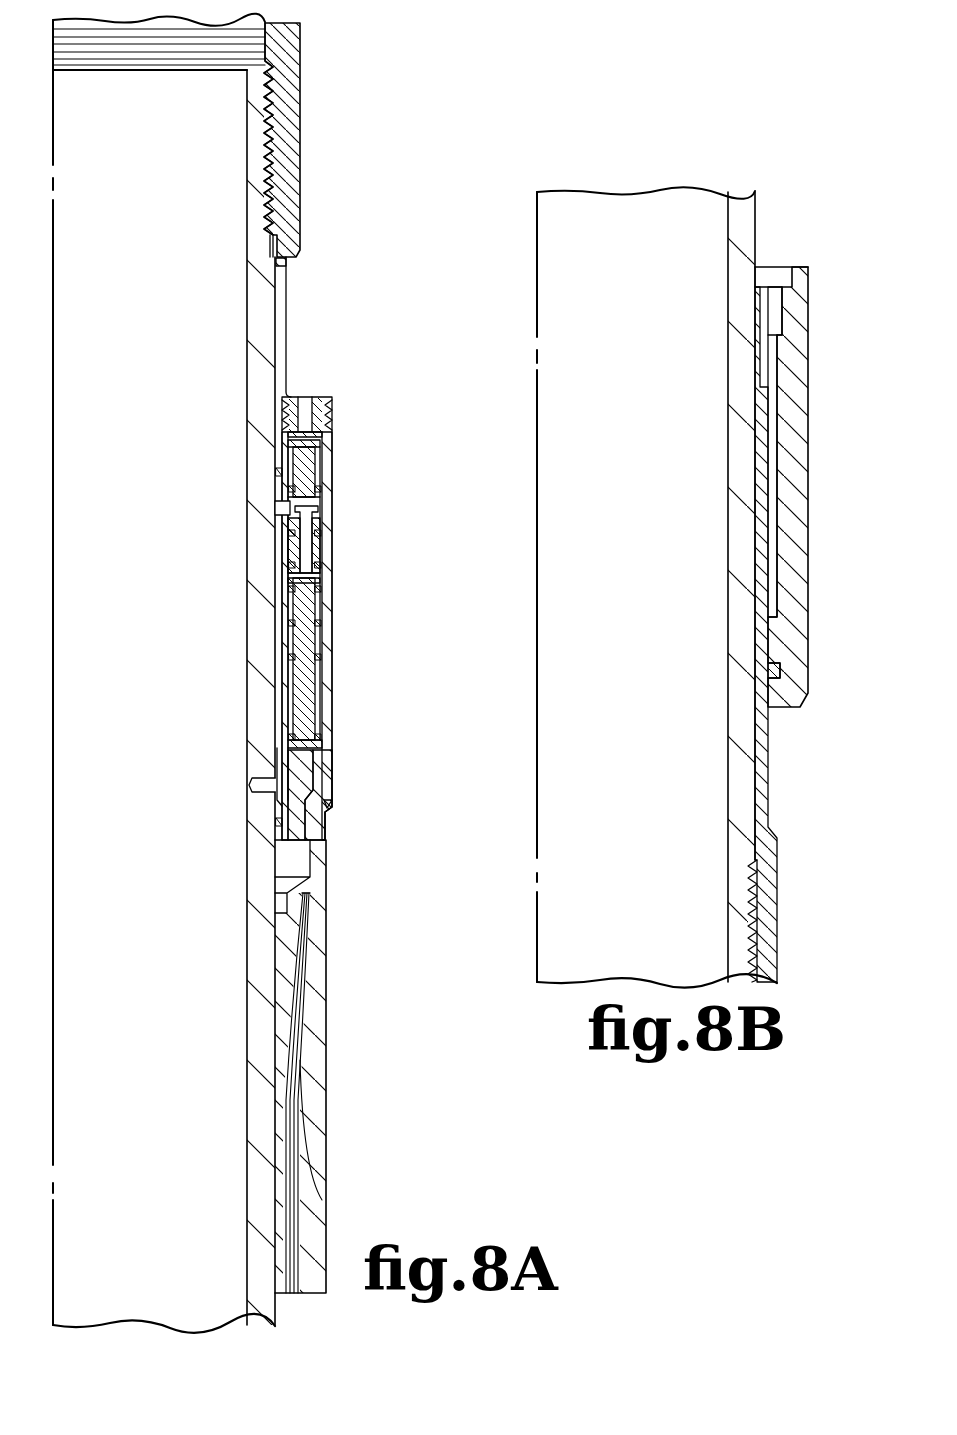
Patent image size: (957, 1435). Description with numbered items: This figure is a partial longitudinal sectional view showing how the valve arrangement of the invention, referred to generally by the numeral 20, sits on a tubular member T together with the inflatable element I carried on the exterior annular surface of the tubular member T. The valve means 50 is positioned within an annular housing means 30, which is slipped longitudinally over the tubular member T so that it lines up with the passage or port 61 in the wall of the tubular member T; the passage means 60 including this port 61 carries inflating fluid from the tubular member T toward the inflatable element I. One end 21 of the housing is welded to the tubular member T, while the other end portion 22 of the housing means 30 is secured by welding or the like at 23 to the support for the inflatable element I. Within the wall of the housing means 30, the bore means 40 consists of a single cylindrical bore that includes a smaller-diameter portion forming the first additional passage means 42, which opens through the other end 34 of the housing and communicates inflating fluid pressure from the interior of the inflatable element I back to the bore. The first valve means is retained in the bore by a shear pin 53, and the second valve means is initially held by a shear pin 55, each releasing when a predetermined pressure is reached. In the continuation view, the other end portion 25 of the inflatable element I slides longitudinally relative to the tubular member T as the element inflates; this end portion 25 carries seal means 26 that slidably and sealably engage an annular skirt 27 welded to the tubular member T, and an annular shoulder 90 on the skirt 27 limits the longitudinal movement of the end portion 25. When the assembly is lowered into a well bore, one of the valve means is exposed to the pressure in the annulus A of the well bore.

In FIG. 8A, the tubular member T is at (245, 369).
In FIG. 8B, the tubular member T is at (727, 421).
In FIG. 8A, the annulus of the well bore A is at (337, 361).
In FIG. 8A, the one end of the annular valve housing means 21 is at (287, 262).
In FIG. 8A, the shear pin 53 is at (305, 445).
In FIG. 8A, the passage means 60 is at (274, 508).
In FIG. 8A, the bore means 40 is at (323, 544).
In FIG. 8A, the valve means 50 is at (283, 637).
In FIG. 8A, the present invention / annular valve housing means 20 is at (336, 648).
In FIG. 8A, the annular housing means 30 is at (336, 679).
In FIG. 8A, the shear pin 55 is at (305, 746).
In FIG. 8A, the port 61 is at (250, 785).
In FIG. 8A, the other end portion of the annular valve housing means 22 is at (334, 778).
In FIG. 8A, the weld 23 is at (330, 805).
In FIG. 8A, the first additional passage means 42 is at (300, 824).
In FIG. 8A, the other end of the valve housing means 34 is at (306, 845).
In FIG. 8A, the inflatable element I is at (290, 1193).
In FIG. 8B, the annular shoulder 90 is at (776, 338).
In FIG. 8B, the other end portion of the inflatable element 25 is at (809, 573).
In FIG. 8B, the annular skirt 27 is at (762, 653).
In FIG. 8B, the seal means 26 is at (781, 670).